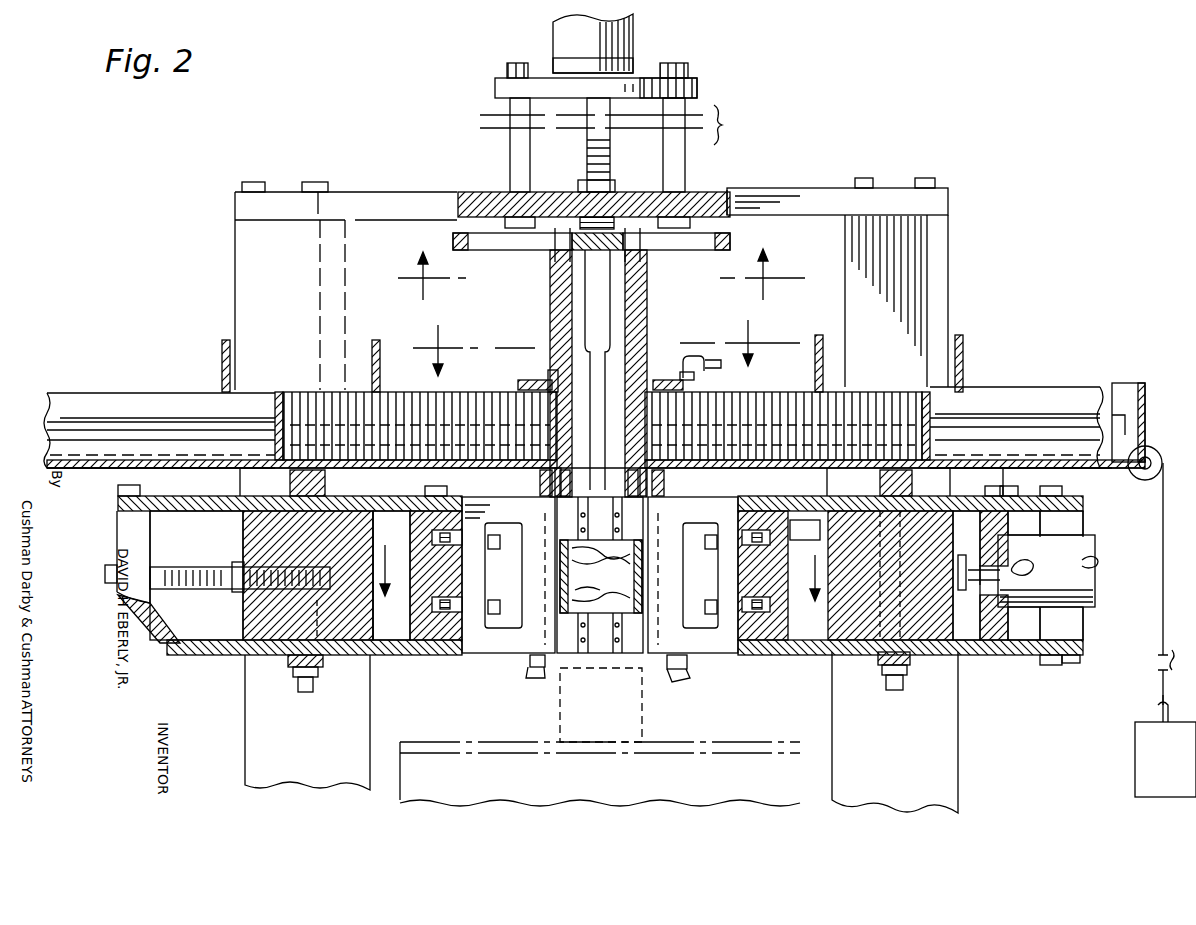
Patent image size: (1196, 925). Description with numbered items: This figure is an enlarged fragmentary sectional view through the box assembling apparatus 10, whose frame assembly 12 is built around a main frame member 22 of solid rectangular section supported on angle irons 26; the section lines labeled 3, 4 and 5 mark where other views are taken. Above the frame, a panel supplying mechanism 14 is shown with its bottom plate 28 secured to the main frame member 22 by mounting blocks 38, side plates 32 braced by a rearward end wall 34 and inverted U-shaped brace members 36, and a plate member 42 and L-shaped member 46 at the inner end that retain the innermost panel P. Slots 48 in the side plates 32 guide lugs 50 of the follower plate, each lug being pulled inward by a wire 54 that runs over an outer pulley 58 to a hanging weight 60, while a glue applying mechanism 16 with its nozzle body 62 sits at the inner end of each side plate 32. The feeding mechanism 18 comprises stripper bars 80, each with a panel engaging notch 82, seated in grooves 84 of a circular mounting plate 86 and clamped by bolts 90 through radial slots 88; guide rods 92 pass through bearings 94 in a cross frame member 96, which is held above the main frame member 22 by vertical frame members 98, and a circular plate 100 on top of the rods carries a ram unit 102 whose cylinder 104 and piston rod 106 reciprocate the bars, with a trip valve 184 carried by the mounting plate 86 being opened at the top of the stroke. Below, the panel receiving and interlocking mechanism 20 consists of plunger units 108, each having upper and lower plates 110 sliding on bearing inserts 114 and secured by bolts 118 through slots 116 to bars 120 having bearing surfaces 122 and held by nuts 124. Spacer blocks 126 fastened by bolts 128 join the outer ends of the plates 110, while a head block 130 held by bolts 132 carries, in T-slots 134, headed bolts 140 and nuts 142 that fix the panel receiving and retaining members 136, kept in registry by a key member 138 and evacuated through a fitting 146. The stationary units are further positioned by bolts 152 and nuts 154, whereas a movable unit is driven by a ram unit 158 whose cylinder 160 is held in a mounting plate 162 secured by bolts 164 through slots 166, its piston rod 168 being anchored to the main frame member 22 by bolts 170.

The apparatus 10 is at (822, 104).
The frame assembly 12 is at (222, 653).
The panel supplying mechanism 14 is at (160, 394).
The glue applying mechanism 16 is at (635, 370).
The feeding mechanism 18 is at (692, 98).
The panel receiving and interlocking mechanism 20 is at (1092, 512).
The main frame member 22 is at (243, 528).
The angle iron 26 is at (370, 718).
The bottom plate 28 is at (222, 458).
The side plate 32 is at (112, 393).
The rearward end wall 34 is at (1146, 404).
The brace member 36 is at (370, 345).
The mounting block 38 is at (270, 480).
The plate member 42 is at (548, 388).
The L-shaped member 46 is at (607, 575).
The slot 48 is at (118, 420).
The lug 50 is at (258, 418).
The wire 54 is at (1160, 638).
The outer pulley 58 is at (1156, 456).
The weight 60 is at (1135, 760).
The nozzle body 62 is at (700, 376).
The stripper bar 80 is at (560, 312).
The notch 82 is at (528, 388).
The groove 84 is at (460, 244).
The mounting plate 86 is at (732, 240).
The slot 88 is at (470, 202).
The bolt 90 is at (578, 205).
The guide rod 92 is at (512, 150).
The bearing 94 is at (512, 186).
The cross frame member 96 is at (845, 190).
The vertical frame member 98 is at (904, 269).
The circular plate 100 is at (495, 84).
The ram unit 102 is at (636, 44).
The cylinder 104 is at (553, 48).
The piston rod 106 is at (610, 150).
The plunger unit 108 is at (118, 492).
The plate 110 is at (795, 676).
The bearing insert 114 is at (855, 658).
The slot 116 is at (296, 492).
The bolt 118 is at (310, 692).
The bar 120 is at (310, 496).
The bearing surface 122 is at (322, 660).
The nut 124 is at (905, 496).
The spacer block 126 is at (118, 528).
The bolt 128 is at (145, 480).
The head block 130 is at (492, 655).
The bolt 132 is at (470, 490).
The T-slot 134 is at (735, 580).
The panel receiving and retaining member 136 is at (535, 666).
The key member 138 is at (432, 603).
The headed bolt 140 is at (545, 496).
The nut 142 is at (556, 496).
The fitting 146 is at (672, 680).
The bolt 152 is at (200, 572).
The nut 154 is at (232, 592).
The ram unit 158 is at (1086, 550).
The cylinder 160 is at (1092, 585).
The mounting plate 162 is at (1005, 554).
The bolt 164 is at (1015, 490).
The slot 166 is at (1050, 490).
The piston rod 168 is at (1020, 570).
The bolt 170 is at (980, 575).
The feeding mechanism trip valve 184 is at (733, 198).
The section line 3- 3 is at (599, 348).
The section line 4- 4 is at (596, 563).
The section line 5- 5 is at (595, 274).
The panel P is at (290, 366).